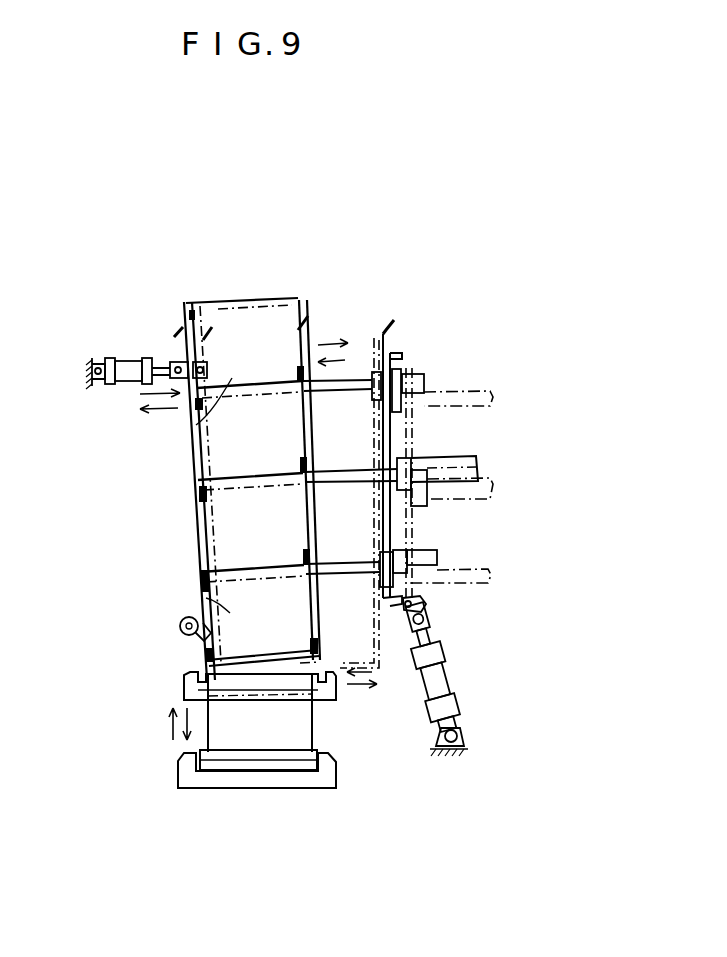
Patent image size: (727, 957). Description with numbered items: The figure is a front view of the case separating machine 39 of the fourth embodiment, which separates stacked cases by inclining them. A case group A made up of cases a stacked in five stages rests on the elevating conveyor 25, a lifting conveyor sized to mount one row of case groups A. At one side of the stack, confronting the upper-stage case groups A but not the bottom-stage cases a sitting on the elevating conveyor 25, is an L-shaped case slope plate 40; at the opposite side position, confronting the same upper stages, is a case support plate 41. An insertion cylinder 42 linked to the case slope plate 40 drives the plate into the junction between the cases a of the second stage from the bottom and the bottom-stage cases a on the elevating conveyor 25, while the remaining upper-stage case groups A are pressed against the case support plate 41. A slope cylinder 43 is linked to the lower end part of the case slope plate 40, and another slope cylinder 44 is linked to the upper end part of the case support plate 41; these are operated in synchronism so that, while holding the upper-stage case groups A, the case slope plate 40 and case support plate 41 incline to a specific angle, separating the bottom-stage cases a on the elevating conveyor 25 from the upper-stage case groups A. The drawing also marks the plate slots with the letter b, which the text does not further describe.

The case separating machine 39 is at (471, 302).
The case slope plate 40 is at (378, 347).
The case support plate 41 is at (215, 309).
The insertion cylinder 42 is at (472, 457).
The slope cylinder 43 is at (452, 682).
The slope cylinder 44 is at (122, 359).
The elevating conveyor 25 is at (182, 761).
The case group A is at (306, 304).
The case a is at (302, 718).
The slots b is at (232, 450).